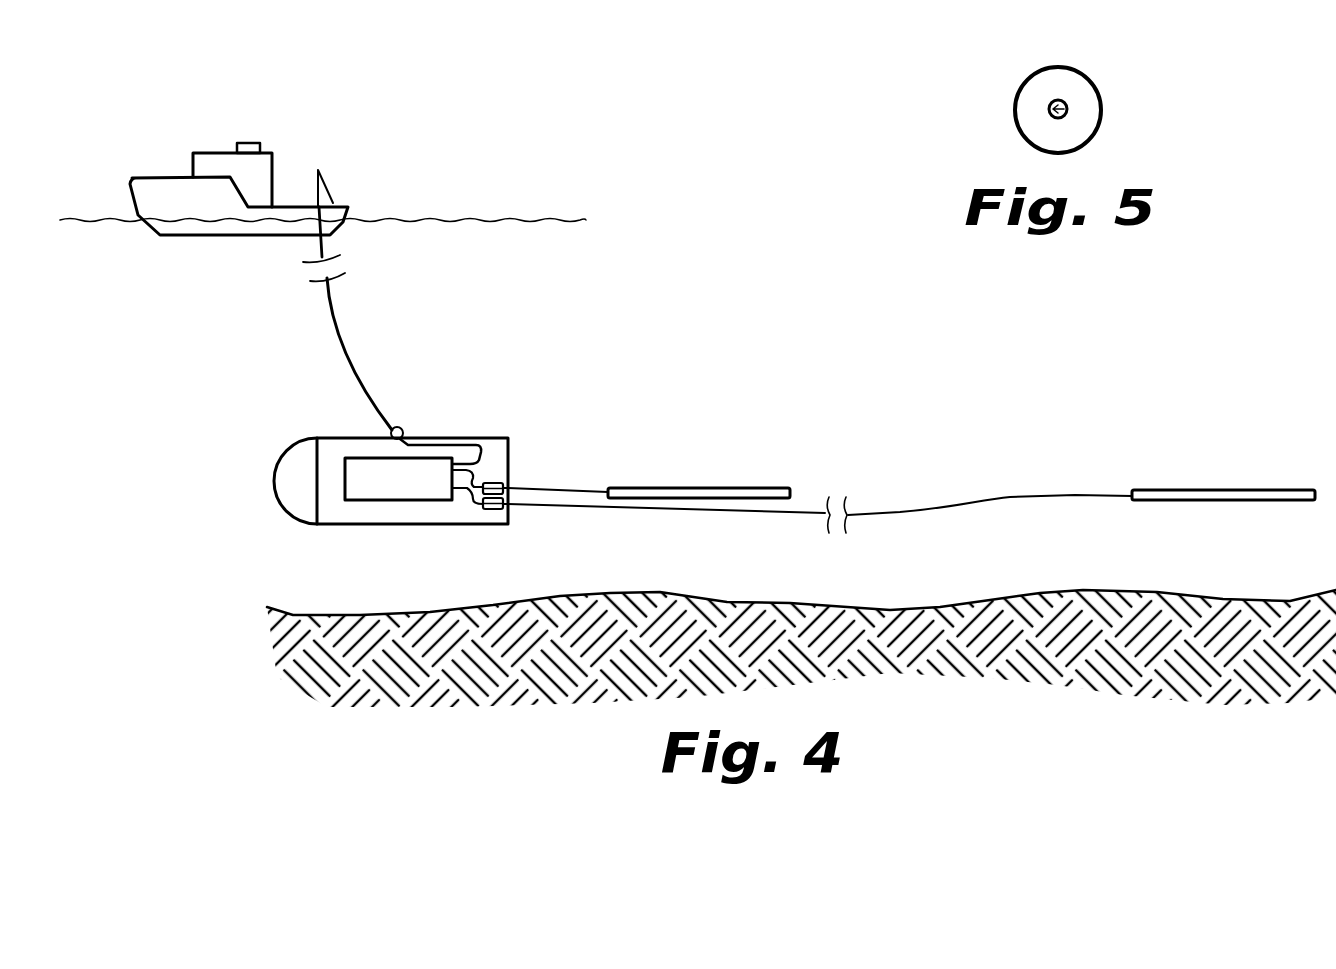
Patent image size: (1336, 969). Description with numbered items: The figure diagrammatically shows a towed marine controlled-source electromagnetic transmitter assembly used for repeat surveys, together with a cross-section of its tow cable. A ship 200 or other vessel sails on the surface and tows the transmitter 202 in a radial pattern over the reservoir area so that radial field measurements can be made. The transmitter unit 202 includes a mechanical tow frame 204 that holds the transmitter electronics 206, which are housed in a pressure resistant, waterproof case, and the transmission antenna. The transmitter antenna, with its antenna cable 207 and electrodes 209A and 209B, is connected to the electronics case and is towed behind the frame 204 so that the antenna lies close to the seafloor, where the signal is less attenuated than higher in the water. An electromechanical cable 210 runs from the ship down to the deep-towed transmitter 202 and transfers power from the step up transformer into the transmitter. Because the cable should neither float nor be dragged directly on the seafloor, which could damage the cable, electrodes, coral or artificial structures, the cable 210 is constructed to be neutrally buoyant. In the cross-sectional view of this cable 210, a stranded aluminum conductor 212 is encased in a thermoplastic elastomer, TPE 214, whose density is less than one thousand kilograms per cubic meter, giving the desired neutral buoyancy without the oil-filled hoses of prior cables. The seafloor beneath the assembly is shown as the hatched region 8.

In FIG. 4, the ship 200 is at (155, 190).
In FIG. 4, the transmitter 202 is at (583, 336).
In FIG. 4, the mechanical tow frame 204 is at (292, 436).
In FIG. 4, the transmitter electronics 206 is at (430, 500).
In FIG. 4, the antenna cable 207 is at (980, 488).
In FIG. 4, the electrode 209A is at (684, 480).
In FIG. 4, the electrode 209B is at (1206, 481).
In FIG. 4, the electromechanical cable 210 is at (337, 348).
In FIG. 5, the electromechanical cable 210 is at (1037, 92).
In FIG. 5, the stranded aluminum conductor 212 is at (1068, 108).
In FIG. 5, the TPE 214 is at (1075, 84).
In FIG. 4, the sea floor 8 is at (702, 612).